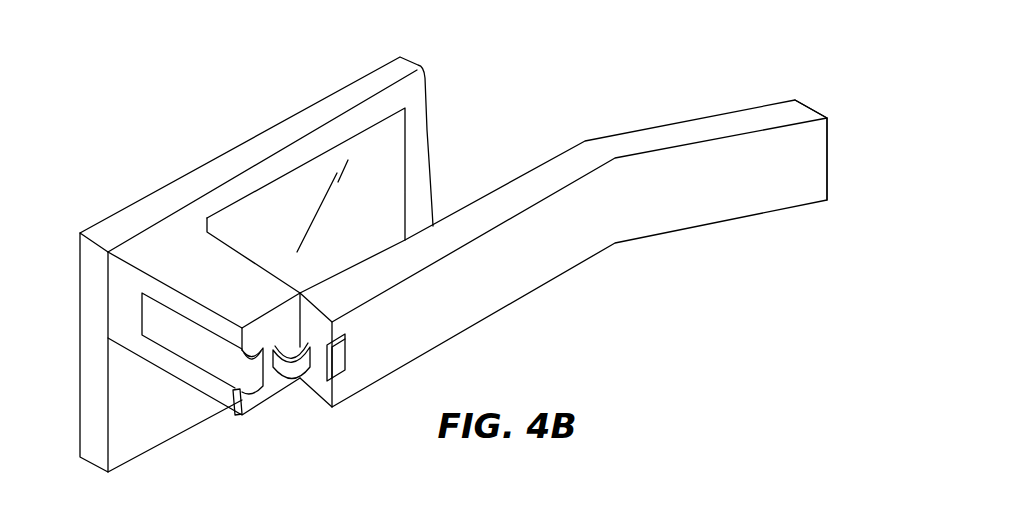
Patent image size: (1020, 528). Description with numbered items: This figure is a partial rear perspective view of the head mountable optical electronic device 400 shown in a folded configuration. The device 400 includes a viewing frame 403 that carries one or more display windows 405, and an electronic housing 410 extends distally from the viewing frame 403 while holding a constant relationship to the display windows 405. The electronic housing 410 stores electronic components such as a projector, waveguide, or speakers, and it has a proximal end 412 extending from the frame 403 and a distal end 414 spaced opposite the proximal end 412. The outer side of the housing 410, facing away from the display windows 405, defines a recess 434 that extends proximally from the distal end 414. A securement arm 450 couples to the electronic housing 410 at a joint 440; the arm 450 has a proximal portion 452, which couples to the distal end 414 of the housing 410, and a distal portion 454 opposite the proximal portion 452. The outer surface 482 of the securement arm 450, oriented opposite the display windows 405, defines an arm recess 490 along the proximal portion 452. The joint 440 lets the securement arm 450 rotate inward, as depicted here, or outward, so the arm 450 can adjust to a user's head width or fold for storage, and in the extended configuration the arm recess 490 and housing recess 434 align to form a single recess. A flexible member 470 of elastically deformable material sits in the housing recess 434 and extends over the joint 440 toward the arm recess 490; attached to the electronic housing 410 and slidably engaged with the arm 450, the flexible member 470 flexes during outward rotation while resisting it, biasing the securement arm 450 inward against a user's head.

The optical electronic device 400 is at (247, 87).
The viewing frame 403 is at (392, 67).
The display window 405 is at (397, 183).
The electronic housing 410 is at (145, 256).
The proximal end 412 is at (147, 255).
The distal end 414 is at (251, 277).
The recess 434 is at (233, 392).
The joint 440 is at (294, 384).
The securement arm 450 is at (616, 122).
The proximal portion 452 is at (380, 362).
The distal portion 454 is at (808, 187).
The flexible member 470 is at (194, 358).
The outer surface 482 is at (575, 243).
The arm recess 490 is at (342, 370).